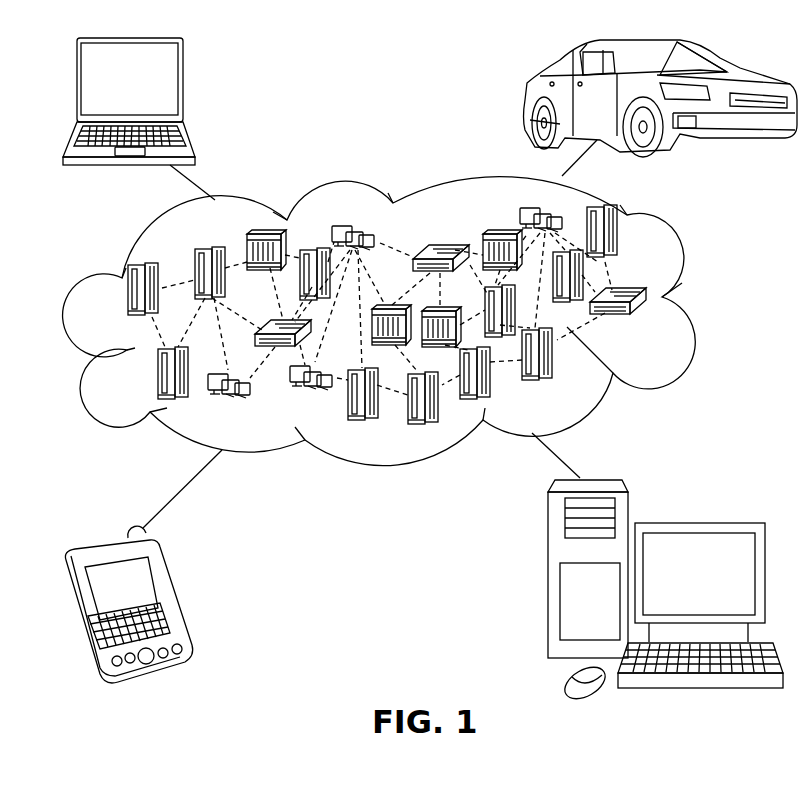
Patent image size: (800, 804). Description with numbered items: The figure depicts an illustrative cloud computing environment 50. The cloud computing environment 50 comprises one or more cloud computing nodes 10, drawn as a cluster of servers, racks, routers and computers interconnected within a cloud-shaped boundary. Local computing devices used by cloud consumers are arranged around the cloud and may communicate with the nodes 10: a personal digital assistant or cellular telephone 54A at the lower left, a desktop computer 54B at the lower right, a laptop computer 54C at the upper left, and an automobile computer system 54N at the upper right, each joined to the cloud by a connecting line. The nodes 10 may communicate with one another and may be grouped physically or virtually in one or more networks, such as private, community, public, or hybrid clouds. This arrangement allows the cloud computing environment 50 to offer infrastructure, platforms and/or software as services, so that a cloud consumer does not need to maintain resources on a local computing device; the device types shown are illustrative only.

The cloud computing nodes 10 is at (655, 324).
The cloud computing environment 50 is at (698, 298).
The personal digital assistant or cellular telephone 54A is at (178, 597).
The desktop computer 54B is at (703, 521).
The laptop computer 54C is at (185, 88).
The automobile computer system 54N is at (523, 102).